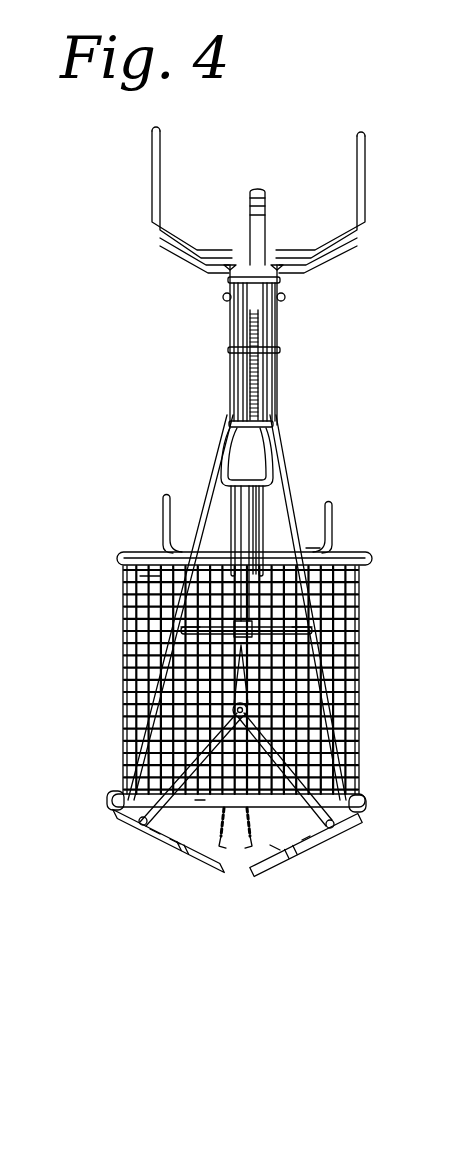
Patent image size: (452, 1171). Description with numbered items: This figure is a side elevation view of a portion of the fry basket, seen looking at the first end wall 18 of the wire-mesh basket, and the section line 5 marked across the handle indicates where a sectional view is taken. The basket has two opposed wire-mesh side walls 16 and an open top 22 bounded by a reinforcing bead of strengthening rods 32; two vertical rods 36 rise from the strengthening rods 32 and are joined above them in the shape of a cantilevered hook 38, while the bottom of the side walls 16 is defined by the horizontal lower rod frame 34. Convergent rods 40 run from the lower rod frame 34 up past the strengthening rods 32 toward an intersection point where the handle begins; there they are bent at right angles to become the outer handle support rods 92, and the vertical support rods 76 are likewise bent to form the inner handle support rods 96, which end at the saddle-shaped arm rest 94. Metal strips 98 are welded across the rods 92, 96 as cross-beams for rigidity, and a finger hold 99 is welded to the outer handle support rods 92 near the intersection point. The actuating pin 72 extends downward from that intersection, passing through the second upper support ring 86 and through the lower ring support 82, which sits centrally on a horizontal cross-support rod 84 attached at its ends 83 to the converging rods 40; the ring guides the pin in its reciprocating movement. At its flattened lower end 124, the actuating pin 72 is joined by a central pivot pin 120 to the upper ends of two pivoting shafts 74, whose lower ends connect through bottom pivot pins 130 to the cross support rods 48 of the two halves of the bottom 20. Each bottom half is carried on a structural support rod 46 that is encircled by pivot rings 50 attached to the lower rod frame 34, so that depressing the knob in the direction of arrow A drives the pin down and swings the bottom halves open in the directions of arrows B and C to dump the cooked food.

The section line 5- 5 is at (268, 154).
The arm rest 94 is at (364, 130).
The arrow A is at (267, 228).
The outer handle support rods 92 is at (232, 320).
The inner handle support rods 96 is at (265, 322).
The metal strips 98 is at (230, 279).
The second upper support ring 86 is at (285, 296).
The finger hold 99 is at (275, 422).
The vertical support rods 76 is at (245, 458).
The actuating pin 72 is at (247, 465).
The convergent rods 40 is at (214, 492).
The vertical rods 36 is at (162, 522).
The cantilevered hook 38 is at (312, 538).
The strengthening rods 32 is at (124, 553).
The open top 22 is at (241, 651).
The side walls 16 is at (123, 664).
The cross-support rod 84 is at (222, 636).
The lower ring support 82 is at (215, 608).
The ends of cross-support rod 83 is at (200, 627).
The first end wall 18 is at (337, 639).
The lower end of actuating pin 124 is at (213, 690).
The pivoting shafts 74 is at (190, 760).
The lower rod frame 34 is at (356, 800).
The pivot rings 50 is at (110, 800).
The bottom 20 is at (116, 824).
The bottom pivot pin 130 is at (136, 834).
The cross support rods 48 is at (162, 841).
The central pivot pin 120 is at (178, 849).
The arrow B is at (200, 789).
The structural support rod 46 is at (252, 862).
The arrow C is at (277, 848).